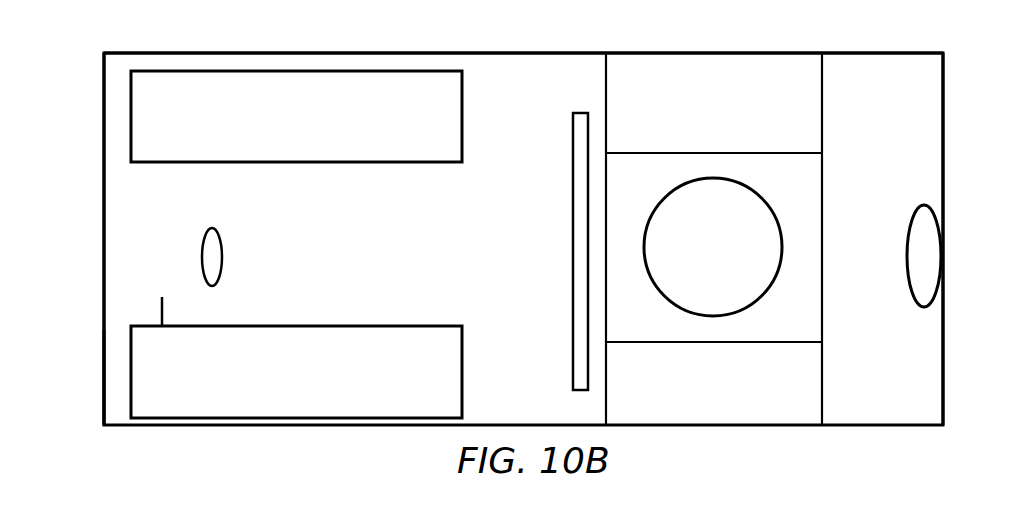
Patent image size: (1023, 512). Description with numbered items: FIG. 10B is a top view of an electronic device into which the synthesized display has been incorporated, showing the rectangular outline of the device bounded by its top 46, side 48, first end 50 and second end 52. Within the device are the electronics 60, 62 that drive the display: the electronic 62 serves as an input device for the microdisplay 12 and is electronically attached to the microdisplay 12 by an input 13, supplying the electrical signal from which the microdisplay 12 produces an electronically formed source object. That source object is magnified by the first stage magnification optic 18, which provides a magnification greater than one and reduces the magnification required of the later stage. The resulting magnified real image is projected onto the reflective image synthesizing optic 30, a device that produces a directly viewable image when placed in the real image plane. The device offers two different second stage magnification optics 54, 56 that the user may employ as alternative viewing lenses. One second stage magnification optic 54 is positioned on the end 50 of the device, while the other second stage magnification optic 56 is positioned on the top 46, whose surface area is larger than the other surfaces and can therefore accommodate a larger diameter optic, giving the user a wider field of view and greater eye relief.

The microdisplay 12 is at (120, 217).
The input 13 is at (163, 302).
The first stage magnification optic 18 is at (222, 245).
The reflective image synthesizing optic 30 is at (573, 125).
The top 46 is at (108, 353).
The side 48 is at (190, 52).
The first end 50 is at (102, 313).
The second end 52 is at (942, 305).
The second stage magnification optic 54 is at (942, 250).
The second stage magnification optic 56 is at (672, 192).
The electronics 60 is at (132, 123).
The electronic 62 is at (142, 393).